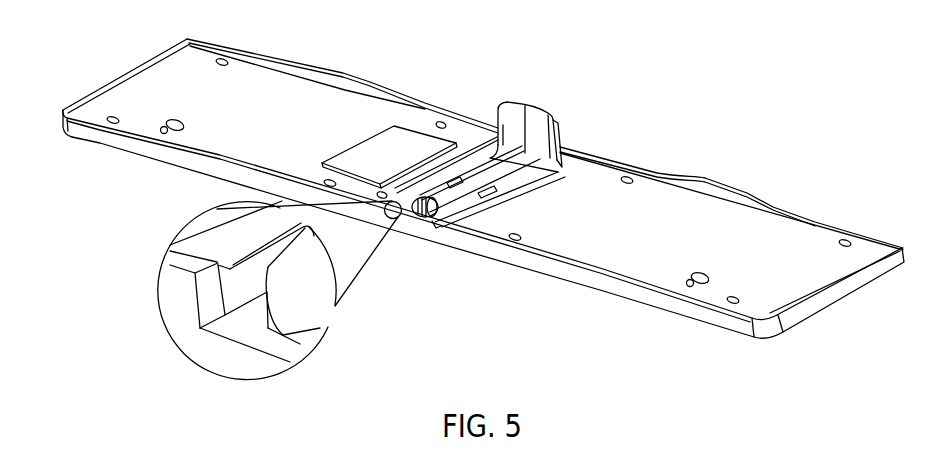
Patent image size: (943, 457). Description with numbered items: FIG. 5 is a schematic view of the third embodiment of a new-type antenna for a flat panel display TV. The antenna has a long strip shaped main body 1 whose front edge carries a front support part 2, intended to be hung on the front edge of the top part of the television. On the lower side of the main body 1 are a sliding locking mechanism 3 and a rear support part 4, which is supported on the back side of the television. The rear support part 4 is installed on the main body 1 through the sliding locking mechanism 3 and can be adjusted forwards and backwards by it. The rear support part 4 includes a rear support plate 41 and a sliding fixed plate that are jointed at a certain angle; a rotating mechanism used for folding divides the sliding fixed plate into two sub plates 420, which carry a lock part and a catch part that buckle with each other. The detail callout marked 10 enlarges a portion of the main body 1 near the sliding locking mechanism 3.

The main body 1 is at (613, 187).
The front support part 2 is at (727, 190).
The sliding locking mechanism 3 is at (432, 221).
The rear support part 4 is at (511, 86).
The rear support plate 41 is at (508, 107).
The sub plates 420 is at (472, 170).
The slot 10 is at (242, 283).